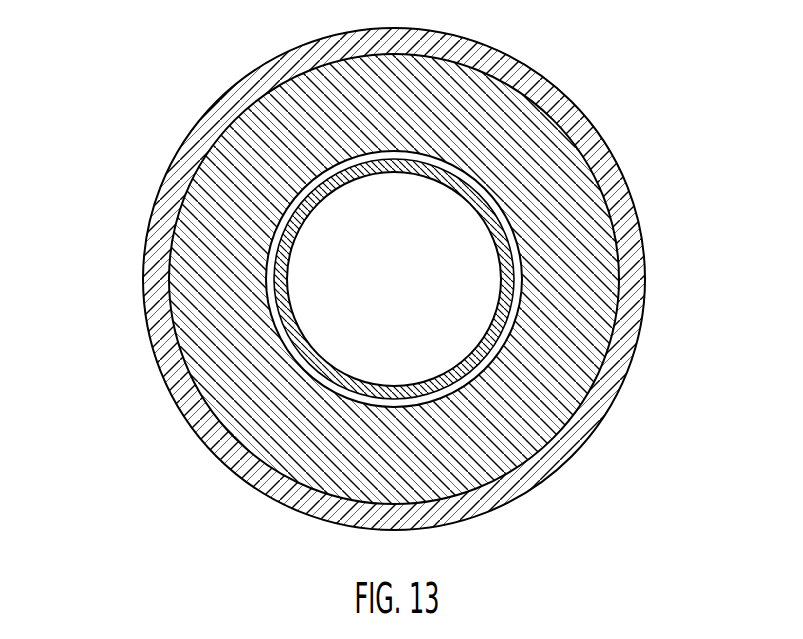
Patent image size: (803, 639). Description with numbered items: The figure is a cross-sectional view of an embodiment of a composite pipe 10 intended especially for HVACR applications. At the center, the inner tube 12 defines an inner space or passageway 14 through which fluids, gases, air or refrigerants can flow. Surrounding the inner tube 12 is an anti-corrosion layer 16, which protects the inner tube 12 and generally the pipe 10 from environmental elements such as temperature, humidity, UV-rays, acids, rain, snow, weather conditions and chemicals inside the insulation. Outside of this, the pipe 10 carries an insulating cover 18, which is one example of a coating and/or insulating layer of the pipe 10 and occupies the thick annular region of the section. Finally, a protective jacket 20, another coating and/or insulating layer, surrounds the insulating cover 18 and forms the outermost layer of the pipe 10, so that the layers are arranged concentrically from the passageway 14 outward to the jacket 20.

The pipe 10 is at (105, 221).
The inner tube 12 is at (503, 217).
The inner space or passageway 14 is at (433, 332).
The anti-corrosion layer 16 is at (530, 278).
The insulating cover 18 is at (257, 430).
The protective jacket 20 is at (155, 331).